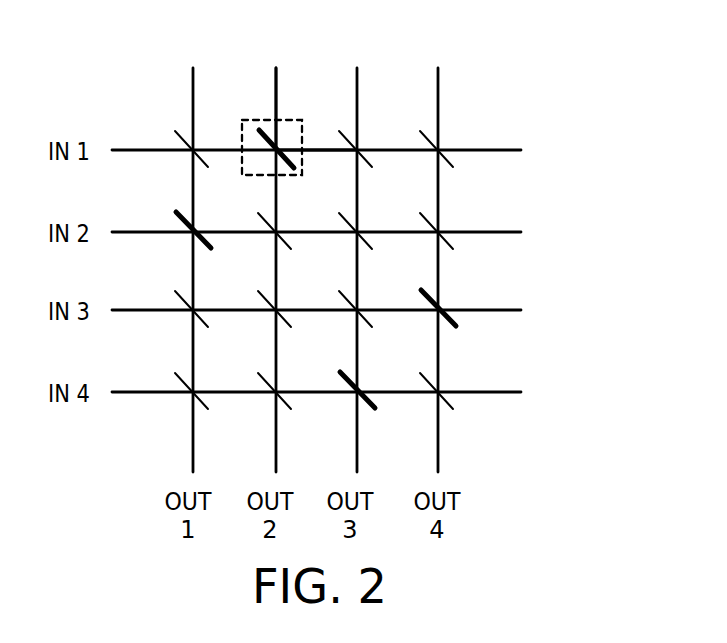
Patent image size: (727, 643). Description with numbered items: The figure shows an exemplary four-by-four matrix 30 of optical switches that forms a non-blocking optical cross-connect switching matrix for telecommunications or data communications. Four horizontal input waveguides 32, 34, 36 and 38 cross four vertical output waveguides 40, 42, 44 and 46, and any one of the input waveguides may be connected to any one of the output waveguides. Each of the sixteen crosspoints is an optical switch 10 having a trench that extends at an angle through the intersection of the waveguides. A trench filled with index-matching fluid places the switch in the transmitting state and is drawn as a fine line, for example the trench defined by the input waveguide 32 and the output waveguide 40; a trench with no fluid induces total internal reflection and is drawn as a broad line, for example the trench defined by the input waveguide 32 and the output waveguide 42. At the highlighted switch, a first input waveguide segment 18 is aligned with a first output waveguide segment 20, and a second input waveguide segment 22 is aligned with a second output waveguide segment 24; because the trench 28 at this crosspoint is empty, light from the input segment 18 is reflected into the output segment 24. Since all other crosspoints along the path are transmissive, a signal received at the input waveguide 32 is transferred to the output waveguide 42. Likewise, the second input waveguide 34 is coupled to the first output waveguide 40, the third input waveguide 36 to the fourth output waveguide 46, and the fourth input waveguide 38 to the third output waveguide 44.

The optical switch 10 is at (301, 101).
The first input waveguide segment 18 is at (218, 147).
The first output waveguide segment 20 is at (341, 152).
The second input waveguide segment 22 is at (276, 92).
The second output waveguide segment 24 is at (272, 203).
The empty trench 28 is at (288, 133).
The matrix 30 is at (573, 111).
The first input waveguide 32 is at (134, 147).
The second input waveguide 34 is at (134, 229).
The third input waveguide 36 is at (134, 307).
The fourth input waveguide 38 is at (134, 389).
The first output waveguide 40 is at (194, 439).
The second output waveguide 42 is at (277, 439).
The third output waveguide 44 is at (358, 439).
The fourth output waveguide 46 is at (439, 439).